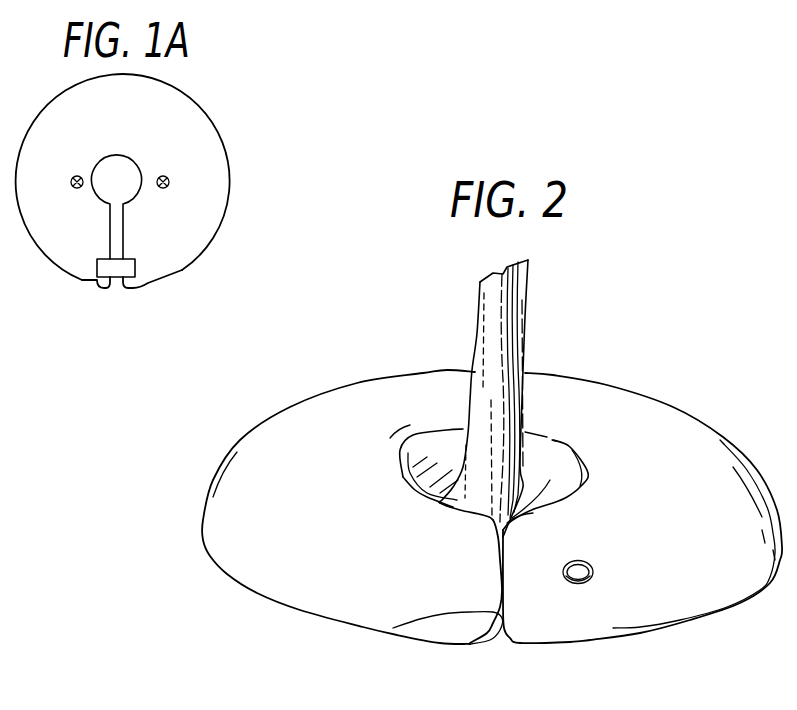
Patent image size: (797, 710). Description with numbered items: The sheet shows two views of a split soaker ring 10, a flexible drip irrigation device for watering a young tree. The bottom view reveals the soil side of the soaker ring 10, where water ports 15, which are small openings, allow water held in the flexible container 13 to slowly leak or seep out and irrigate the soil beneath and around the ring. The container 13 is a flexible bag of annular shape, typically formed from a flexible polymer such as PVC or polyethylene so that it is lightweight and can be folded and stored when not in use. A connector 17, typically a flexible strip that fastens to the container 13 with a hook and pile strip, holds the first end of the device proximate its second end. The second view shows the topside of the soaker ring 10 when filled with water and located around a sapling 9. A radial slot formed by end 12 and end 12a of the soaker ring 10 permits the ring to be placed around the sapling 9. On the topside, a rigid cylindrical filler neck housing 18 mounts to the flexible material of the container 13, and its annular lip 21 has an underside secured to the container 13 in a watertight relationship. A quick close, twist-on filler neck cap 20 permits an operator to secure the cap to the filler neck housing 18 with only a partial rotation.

In FIG. 2, the sapling 9 is at (517, 318).
In FIG. 1A, the split soaker ring 10 is at (236, 153).
In FIG. 2, the split soaker ring 10 is at (305, 437).
In FIG. 2, the end of soaker ring 12 is at (500, 637).
In FIG. 2, the end of soaker ring 12a is at (393, 628).
In FIG. 2, the flexible container 13 is at (688, 432).
In FIG. 1A, the water ports 15 is at (159, 177).
In FIG. 1A, the connector 17 is at (78, 281).
In FIG. 2, the filler neck housing 18 is at (591, 541).
In FIG. 2, the filler neck cap 20 is at (583, 580).
In FIG. 2, the annular lip 21 is at (602, 560).